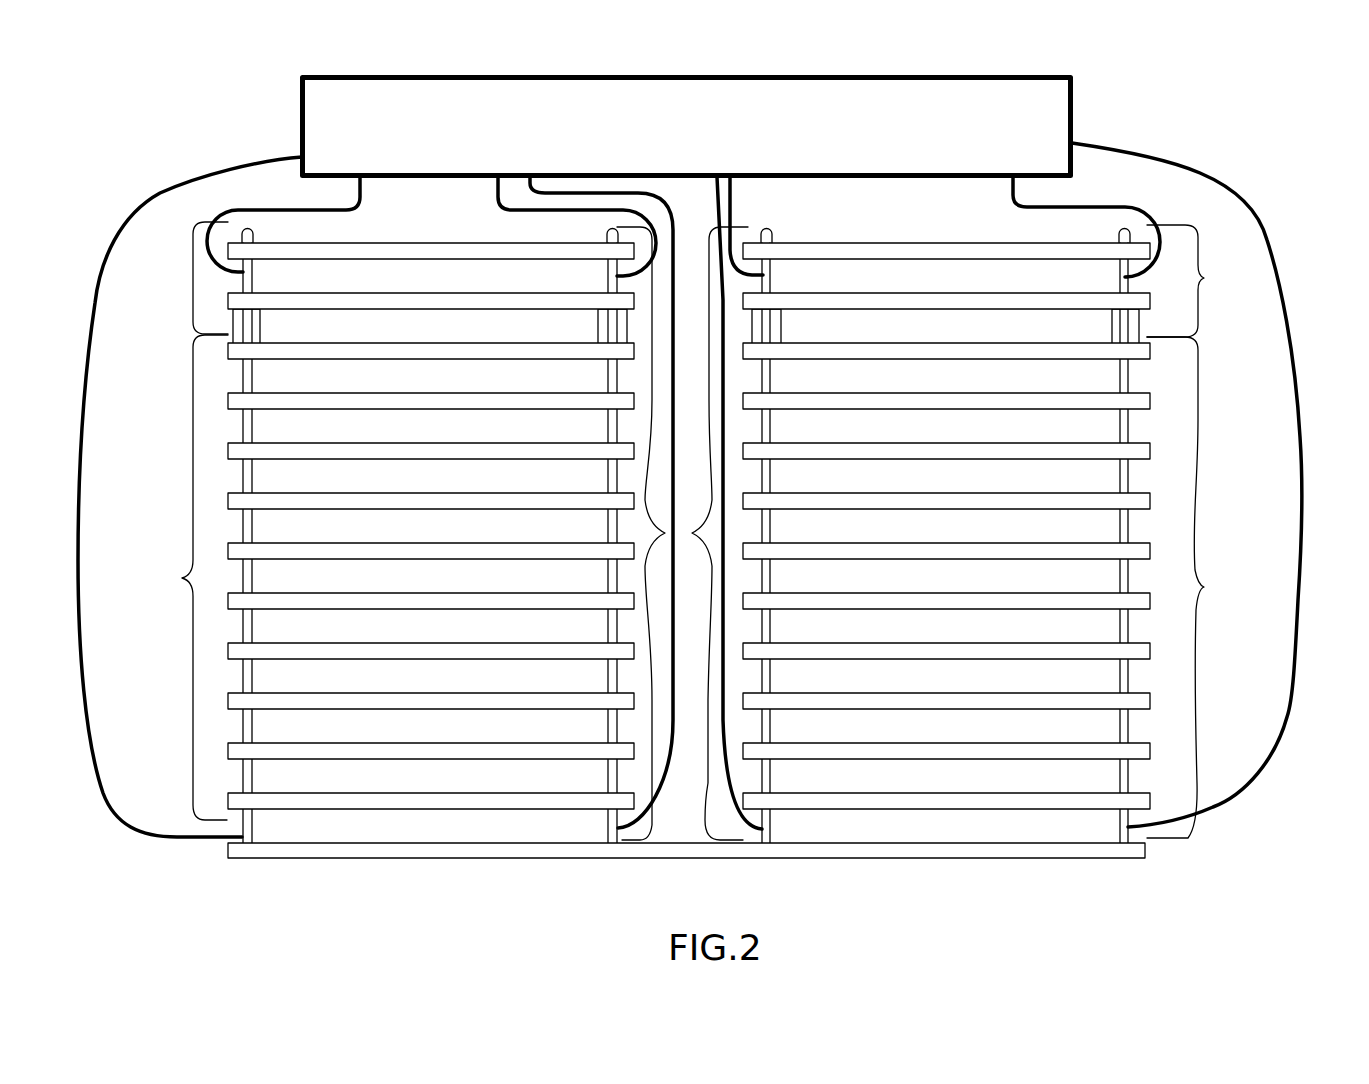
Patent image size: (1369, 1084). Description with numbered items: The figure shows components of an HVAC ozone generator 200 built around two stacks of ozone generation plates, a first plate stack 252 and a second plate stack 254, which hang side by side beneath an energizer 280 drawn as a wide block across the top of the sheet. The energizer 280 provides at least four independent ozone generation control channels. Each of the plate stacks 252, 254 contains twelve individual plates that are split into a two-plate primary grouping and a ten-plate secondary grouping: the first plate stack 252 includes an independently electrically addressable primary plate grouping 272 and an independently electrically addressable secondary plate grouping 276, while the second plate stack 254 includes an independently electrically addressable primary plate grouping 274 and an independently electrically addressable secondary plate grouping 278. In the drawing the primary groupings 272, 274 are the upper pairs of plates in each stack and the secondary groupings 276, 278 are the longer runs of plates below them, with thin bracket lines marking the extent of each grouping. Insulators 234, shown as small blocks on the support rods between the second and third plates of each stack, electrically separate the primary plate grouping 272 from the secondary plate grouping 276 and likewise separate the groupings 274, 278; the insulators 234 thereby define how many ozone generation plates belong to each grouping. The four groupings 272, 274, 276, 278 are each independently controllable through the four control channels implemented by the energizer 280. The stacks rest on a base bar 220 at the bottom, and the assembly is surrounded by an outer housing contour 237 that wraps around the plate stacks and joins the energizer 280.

The HVAC ozone generator 200 is at (1148, 117).
The base plate 220 is at (1145, 848).
The insulators 234 is at (247, 330).
The housing wall 237 is at (133, 237).
The first plate stack 252 is at (652, 820).
The second plate stack 254 is at (705, 783).
The primary plate grouping 272 is at (192, 278).
The primary plate grouping 274 is at (1268, 247).
The secondary plate grouping 276 is at (182, 578).
The secondary plate grouping 278 is at (1204, 587).
The energizer 280 is at (1077, 117).